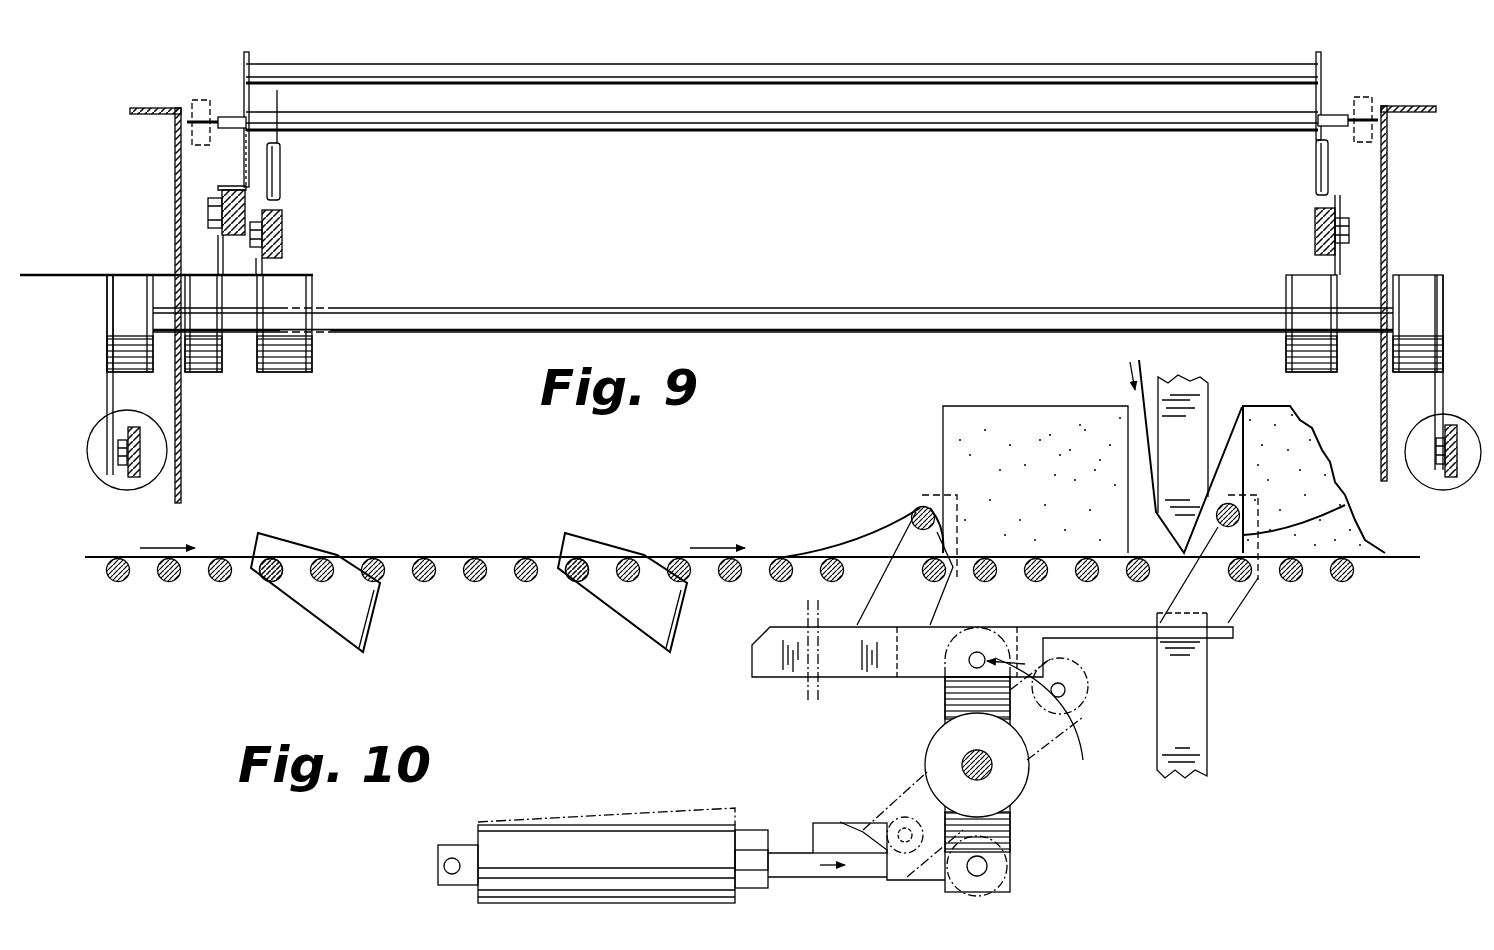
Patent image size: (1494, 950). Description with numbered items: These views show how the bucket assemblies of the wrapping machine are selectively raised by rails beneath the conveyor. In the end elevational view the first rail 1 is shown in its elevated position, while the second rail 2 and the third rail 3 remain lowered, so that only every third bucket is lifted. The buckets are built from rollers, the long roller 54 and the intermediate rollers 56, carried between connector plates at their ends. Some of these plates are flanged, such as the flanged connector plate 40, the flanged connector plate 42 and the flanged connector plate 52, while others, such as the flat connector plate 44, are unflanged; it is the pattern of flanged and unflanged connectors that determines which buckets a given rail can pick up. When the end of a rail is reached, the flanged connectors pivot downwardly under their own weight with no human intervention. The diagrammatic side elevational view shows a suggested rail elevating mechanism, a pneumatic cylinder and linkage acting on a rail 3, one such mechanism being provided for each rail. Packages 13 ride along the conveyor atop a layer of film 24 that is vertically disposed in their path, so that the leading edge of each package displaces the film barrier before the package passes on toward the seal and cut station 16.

In FIG. 9, the first rail 1 is at (225, 232).
In FIG. 9, the second rail 2 is at (283, 238).
In FIG. 9, the third rail 3 is at (1316, 233).
In FIG. 10, the third rail 3 is at (918, 672).
In FIG. 10, the package 13 is at (1000, 410).
In FIG. 10, the seal and cut station 16 is at (1224, 398).
In FIG. 10, the layer of film 24 is at (808, 548).
In FIG. 10, the flanged connector plate 40 is at (318, 605).
In FIG. 9, the flanged connector plate 42 is at (244, 155).
In FIG. 9, the flat connector plate 44 is at (1316, 160).
In FIG. 9, the flanged connector plate 52 is at (282, 168).
In FIG. 9, the long roller 54 is at (665, 133).
In FIG. 10, the long roller 54 is at (337, 551).
In FIG. 9, the intermediate roller 56 is at (527, 84).
In FIG. 10, the intermediate roller 56 is at (268, 577).